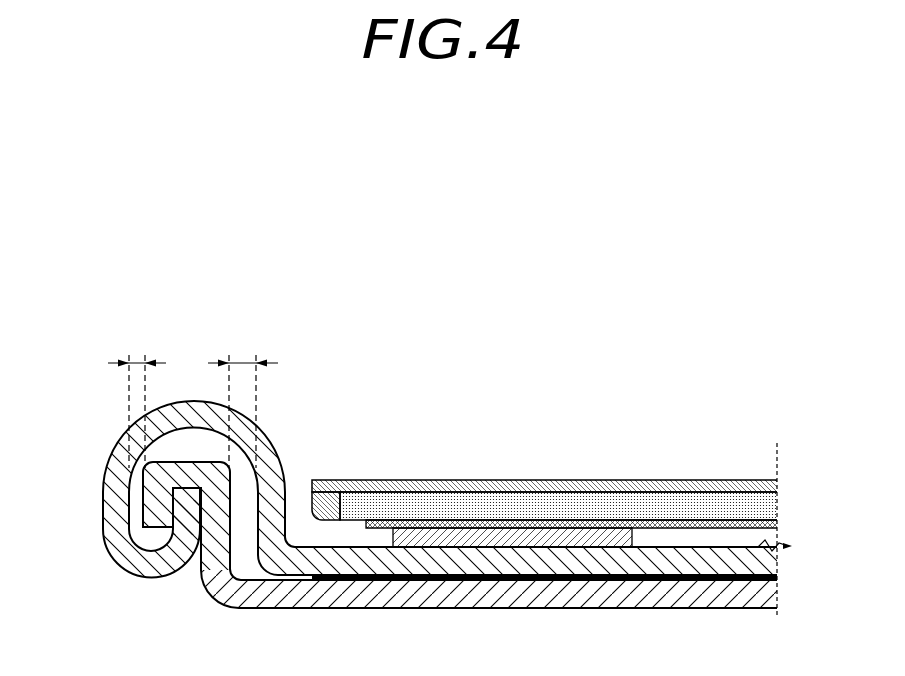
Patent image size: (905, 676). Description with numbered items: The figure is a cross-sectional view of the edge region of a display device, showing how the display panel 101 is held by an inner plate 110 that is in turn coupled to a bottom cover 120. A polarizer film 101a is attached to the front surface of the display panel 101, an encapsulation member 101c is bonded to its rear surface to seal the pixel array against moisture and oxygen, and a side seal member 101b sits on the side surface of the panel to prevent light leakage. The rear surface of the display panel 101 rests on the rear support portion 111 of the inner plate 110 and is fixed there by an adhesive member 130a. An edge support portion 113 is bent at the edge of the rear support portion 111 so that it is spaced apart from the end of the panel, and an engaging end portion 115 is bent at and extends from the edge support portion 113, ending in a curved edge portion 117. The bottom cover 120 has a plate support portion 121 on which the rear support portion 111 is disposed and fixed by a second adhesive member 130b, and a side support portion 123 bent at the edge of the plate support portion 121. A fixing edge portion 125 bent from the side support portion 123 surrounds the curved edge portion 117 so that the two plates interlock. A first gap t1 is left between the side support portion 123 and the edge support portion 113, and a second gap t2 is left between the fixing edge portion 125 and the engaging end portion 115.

The display panel 101 is at (427, 503).
The polarizer film 101a is at (500, 486).
The side seal member 101b is at (327, 503).
The encapsulation member 101c is at (683, 518).
The inner plate 110 is at (785, 560).
The rear support portion 111 is at (560, 563).
The edge support portion 113 is at (273, 507).
The engaging end portion 115 is at (110, 478).
The curved edge portion 117 is at (185, 500).
The bottom cover 120 is at (783, 593).
The plate support portion 121 is at (390, 597).
The side support portion 123 is at (218, 538).
The fixing edge portion 125 is at (158, 515).
The adhesive member 130a is at (497, 538).
The adhesive member 130b is at (673, 581).
The first gap t1 is at (243, 403).
The second gap t2 is at (137, 403).